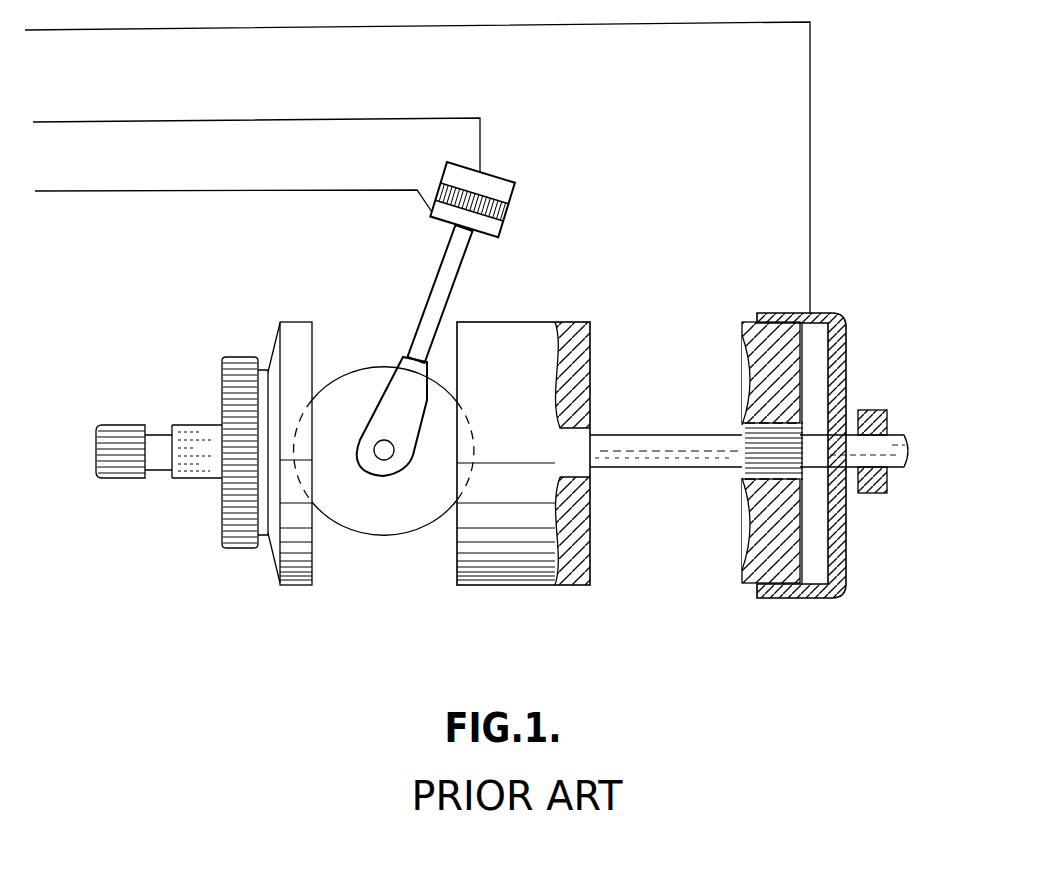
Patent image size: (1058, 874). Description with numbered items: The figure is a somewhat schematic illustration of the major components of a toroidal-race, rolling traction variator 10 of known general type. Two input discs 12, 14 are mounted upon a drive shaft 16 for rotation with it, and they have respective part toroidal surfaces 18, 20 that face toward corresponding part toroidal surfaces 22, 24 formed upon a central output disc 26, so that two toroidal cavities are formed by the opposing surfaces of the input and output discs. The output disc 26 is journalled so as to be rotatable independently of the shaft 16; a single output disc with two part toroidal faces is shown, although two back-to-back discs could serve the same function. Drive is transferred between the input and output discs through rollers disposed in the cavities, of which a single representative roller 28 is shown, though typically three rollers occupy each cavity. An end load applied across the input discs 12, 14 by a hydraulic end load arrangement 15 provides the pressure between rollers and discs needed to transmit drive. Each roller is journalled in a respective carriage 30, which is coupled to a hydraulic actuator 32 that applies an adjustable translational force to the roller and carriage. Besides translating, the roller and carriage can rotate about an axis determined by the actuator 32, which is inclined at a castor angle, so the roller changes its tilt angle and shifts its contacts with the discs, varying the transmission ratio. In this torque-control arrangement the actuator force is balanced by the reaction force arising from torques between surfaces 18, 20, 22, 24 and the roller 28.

The clutch assembly 10 is at (294, 610).
The input disc 12 is at (272, 343).
The input disc 14 is at (753, 582).
The hydraulic end load arrangement 15 is at (856, 583).
The drive shaft 16 is at (197, 479).
The part toroidal surface 18 is at (316, 360).
The part toroidal surface 20 is at (748, 375).
The part toroidal surface 22 is at (450, 567).
The part toroidal surface 24 is at (577, 528).
The output disc 26 is at (510, 360).
The roller 28 is at (367, 535).
The carriage 30 is at (402, 382).
The hydraulic actuator 32 is at (518, 214).